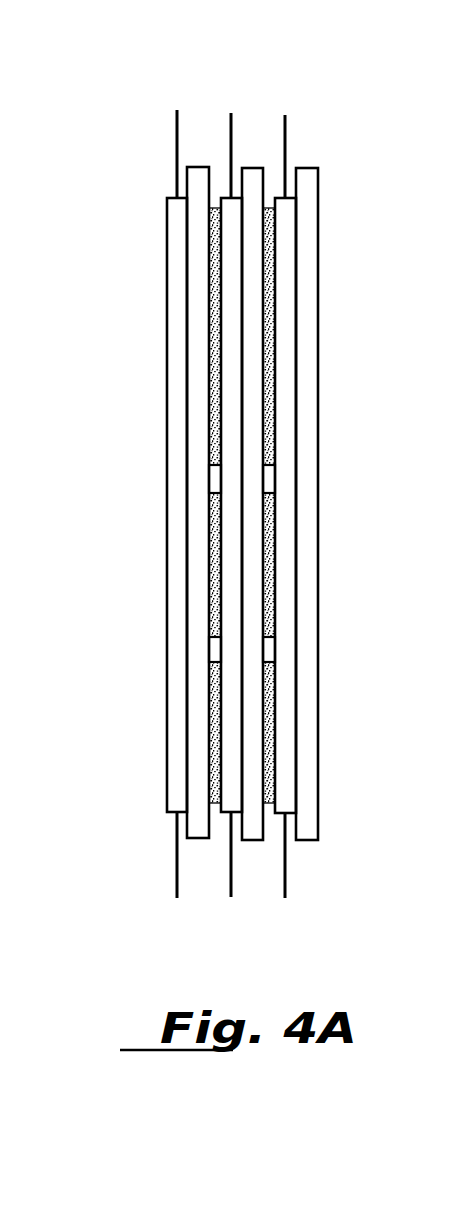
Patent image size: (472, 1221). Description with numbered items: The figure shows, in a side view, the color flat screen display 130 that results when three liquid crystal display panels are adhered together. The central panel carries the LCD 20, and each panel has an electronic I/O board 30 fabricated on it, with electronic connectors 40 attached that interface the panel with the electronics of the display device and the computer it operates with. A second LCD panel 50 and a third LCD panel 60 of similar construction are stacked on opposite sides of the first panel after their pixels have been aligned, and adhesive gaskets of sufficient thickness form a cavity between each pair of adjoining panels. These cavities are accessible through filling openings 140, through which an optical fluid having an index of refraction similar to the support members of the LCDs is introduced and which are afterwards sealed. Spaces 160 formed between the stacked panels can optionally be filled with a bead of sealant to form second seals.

The LCD 20 is at (257, 833).
The electronic I/O board 30 is at (230, 372).
The electronic connectors 40 is at (180, 130).
The second LCD panel 50 is at (307, 823).
The third LCD panel 60 is at (200, 828).
The color flat screen display 130 is at (150, 693).
The filling openings 140 is at (207, 483).
The spaces 160 is at (220, 183).